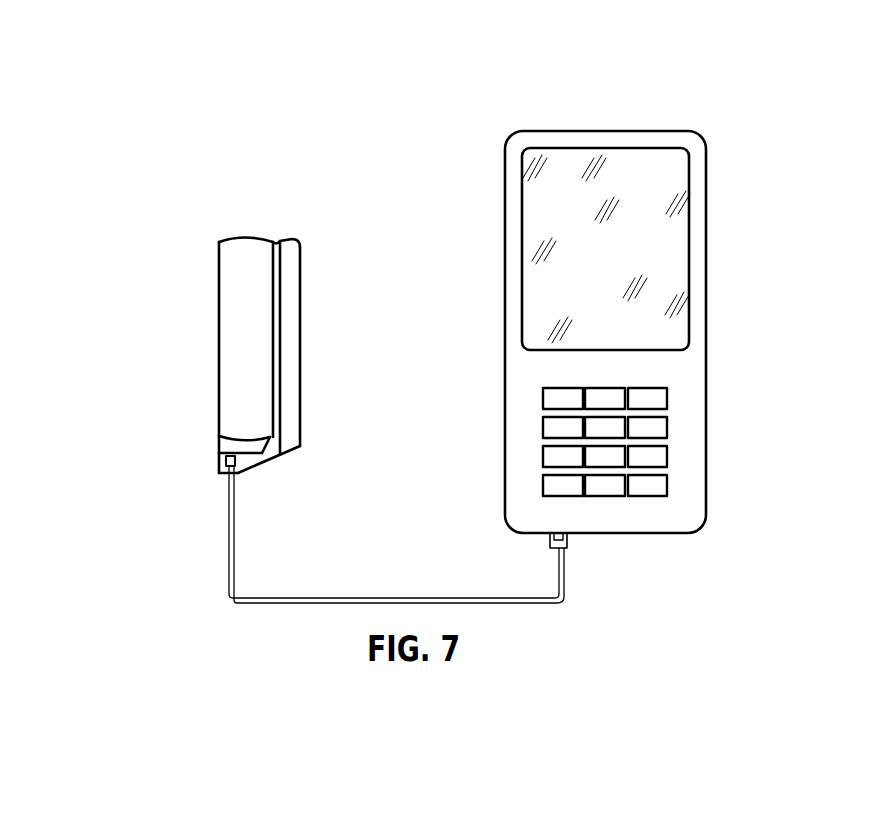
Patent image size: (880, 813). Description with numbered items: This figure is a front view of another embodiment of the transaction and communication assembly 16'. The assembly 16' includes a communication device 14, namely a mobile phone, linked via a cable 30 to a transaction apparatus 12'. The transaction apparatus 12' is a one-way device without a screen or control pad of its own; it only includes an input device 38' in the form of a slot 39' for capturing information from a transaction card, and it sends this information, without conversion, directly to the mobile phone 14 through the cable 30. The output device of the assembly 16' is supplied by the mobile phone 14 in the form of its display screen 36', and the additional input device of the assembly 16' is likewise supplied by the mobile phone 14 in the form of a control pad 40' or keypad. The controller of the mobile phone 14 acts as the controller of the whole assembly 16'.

The transaction and communication assembly 16' is at (425, 305).
The transaction apparatus 12' is at (238, 319).
The input device 38' is at (260, 287).
The slot 39' is at (289, 486).
The cable 30 is at (413, 597).
The communication device 14 is at (725, 162).
The display screen 36' is at (662, 249).
The control pad 40' is at (670, 454).